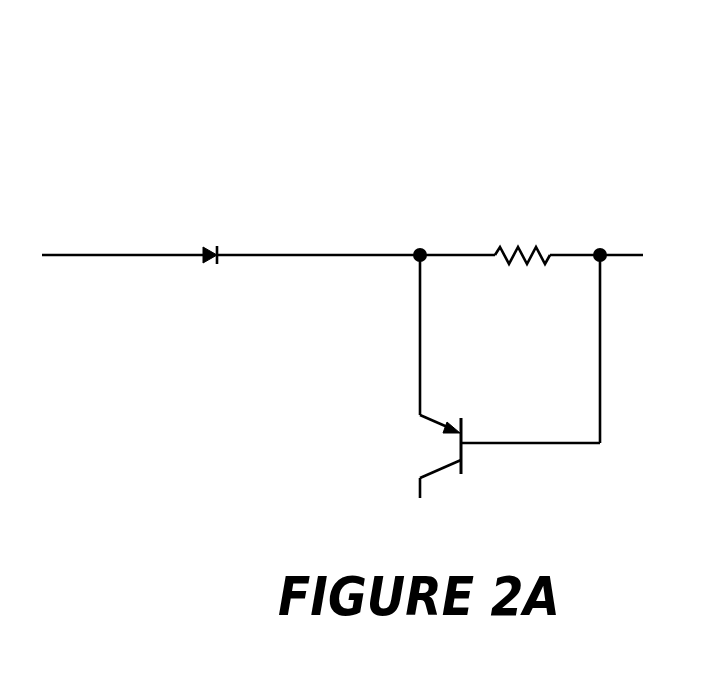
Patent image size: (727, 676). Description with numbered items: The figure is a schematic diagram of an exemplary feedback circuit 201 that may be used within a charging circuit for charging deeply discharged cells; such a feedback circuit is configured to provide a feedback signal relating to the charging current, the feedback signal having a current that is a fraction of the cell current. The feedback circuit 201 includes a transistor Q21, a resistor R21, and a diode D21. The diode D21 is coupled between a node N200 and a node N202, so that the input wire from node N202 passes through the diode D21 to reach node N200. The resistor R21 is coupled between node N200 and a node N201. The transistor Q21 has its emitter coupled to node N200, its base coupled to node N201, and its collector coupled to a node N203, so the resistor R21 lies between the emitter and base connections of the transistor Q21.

The feedback circuit 201 is at (357, 85).
The node N202 is at (95, 215).
The node N200 is at (408, 238).
The node N201 is at (565, 245).
The node N203 is at (445, 504).
The diode D21 is at (307, 282).
The resistor R21 is at (547, 268).
The transistor Q21 is at (441, 423).